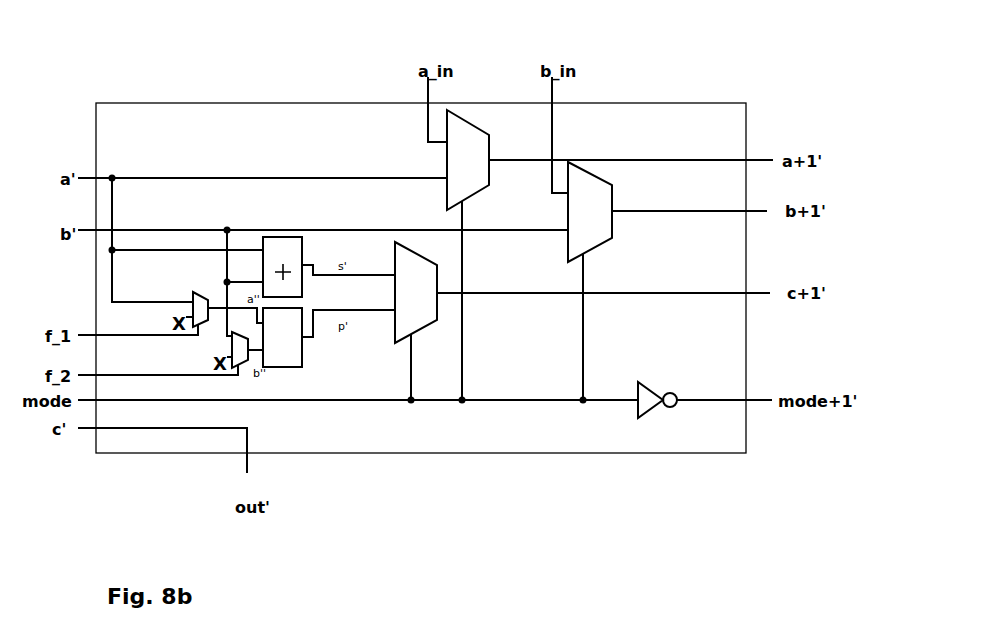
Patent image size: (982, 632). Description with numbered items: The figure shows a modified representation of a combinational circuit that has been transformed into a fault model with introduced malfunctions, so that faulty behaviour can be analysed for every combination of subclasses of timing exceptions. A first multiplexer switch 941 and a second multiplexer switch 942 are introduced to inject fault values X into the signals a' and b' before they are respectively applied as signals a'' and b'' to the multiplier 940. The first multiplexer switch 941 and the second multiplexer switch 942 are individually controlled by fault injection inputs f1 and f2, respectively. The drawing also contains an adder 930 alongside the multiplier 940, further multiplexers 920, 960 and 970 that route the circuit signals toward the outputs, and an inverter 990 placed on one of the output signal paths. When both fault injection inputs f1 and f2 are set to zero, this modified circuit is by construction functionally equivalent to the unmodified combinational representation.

The multiplexer for a output 920 is at (472, 165).
The adder 930 is at (277, 250).
The multiplier 940 is at (277, 345).
The first multiplexer switch 941 is at (193, 290).
The second multiplexer switch 942 is at (243, 363).
The multiplexer for b output 960 is at (603, 210).
The multiplexer for c output 970 is at (425, 305).
The inverter 990 is at (644, 399).